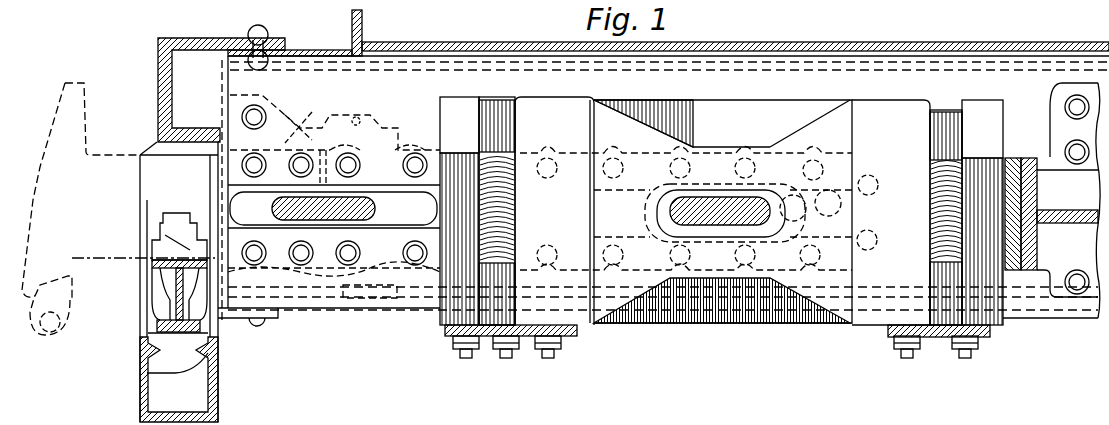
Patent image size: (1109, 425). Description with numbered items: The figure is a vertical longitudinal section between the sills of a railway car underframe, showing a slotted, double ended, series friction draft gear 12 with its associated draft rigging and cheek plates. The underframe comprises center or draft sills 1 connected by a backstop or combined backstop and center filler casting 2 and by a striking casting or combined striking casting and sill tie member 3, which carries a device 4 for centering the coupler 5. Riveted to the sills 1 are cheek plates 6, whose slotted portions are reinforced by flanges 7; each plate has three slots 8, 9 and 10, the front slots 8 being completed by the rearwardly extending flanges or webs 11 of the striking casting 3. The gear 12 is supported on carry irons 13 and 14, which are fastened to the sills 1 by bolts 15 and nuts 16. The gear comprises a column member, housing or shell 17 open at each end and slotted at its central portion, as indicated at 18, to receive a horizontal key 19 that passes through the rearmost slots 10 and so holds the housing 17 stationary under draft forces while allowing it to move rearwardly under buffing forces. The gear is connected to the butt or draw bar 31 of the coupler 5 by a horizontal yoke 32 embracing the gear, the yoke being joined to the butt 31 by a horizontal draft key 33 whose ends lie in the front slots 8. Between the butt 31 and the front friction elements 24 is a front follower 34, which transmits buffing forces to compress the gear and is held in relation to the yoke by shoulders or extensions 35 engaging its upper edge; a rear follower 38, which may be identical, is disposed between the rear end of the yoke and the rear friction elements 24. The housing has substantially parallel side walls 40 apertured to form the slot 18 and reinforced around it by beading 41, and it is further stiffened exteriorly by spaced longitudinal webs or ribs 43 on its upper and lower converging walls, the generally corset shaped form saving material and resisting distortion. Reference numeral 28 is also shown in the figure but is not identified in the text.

The center or draft sills 1 is at (1033, 320).
The backstop or combined backstop and center filler casting 2 is at (1102, 200).
The striking casting or combined striking casting and sill tie member 3 is at (218, 410).
The centering device 4 is at (160, 327).
The coupler 5 is at (85, 247).
The cheek plates 6 is at (386, 150).
The flanges 7 is at (384, 190).
The front slots 8 is at (408, 215).
The slots 9 is at (622, 173).
The rearmost slots 10 is at (824, 174).
The rearwardly extending flanges or webs 11 is at (300, 130).
The slotted, double ended, series friction draft gear 12 is at (762, 100).
The carry iron 13 is at (577, 333).
The carry iron 14 is at (893, 334).
The bolts 15 is at (473, 359).
The nuts 16 is at (540, 347).
The column member, housing or shell 17 is at (810, 297).
The slot 18 is at (725, 227).
The horizontal key 19 is at (721, 200).
The friction elements 24 is at (505, 108).
The spring 28 is at (514, 203).
The butt or draw bar 31 is at (135, 153).
The horizontal yoke 32 is at (1012, 163).
The horizontal draft key 33 is at (304, 208).
The front follower 34 is at (452, 285).
The shoulders or extensions 35 is at (447, 108).
The rear follower 38 is at (985, 283).
The side walls 40 is at (775, 148).
The beading 41 is at (618, 264).
The longitudinal webs or ribs 43 is at (667, 112).